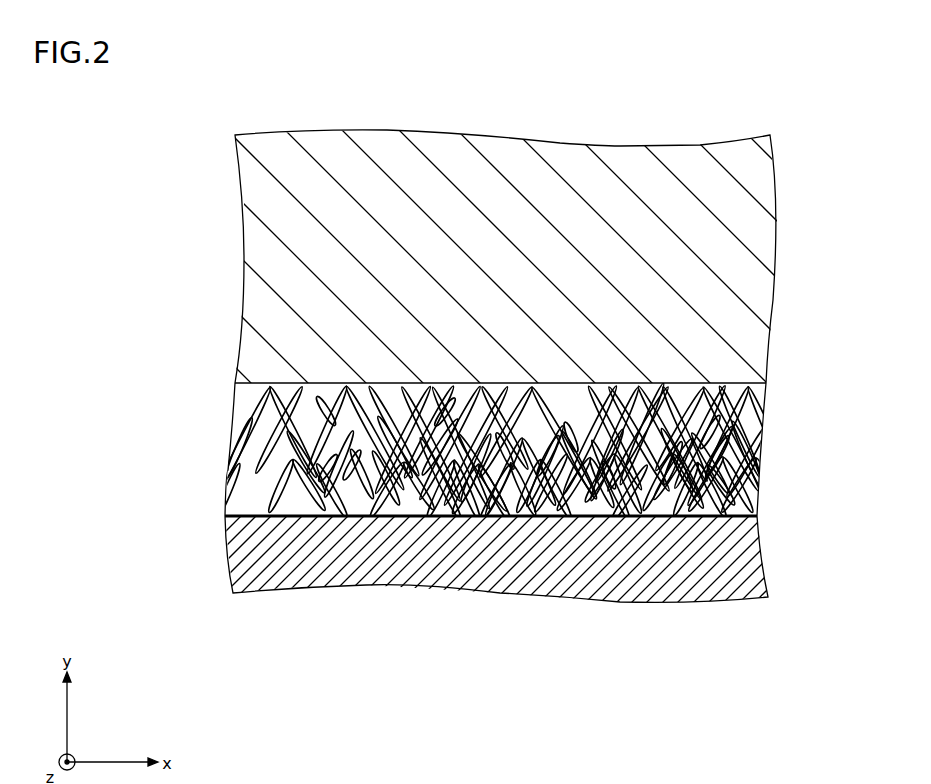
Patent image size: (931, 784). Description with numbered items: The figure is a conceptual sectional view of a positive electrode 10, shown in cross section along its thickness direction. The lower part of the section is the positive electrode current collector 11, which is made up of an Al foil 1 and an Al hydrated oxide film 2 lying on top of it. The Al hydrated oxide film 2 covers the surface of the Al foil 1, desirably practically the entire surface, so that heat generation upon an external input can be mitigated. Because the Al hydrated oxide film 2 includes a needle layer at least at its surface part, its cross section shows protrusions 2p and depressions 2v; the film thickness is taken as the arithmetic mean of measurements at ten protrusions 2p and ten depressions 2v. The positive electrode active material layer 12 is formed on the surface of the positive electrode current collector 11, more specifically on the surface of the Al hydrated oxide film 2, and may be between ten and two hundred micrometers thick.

The positive electrode 10 is at (122, 150).
The positive electrode active material layer 12 is at (204, 131).
The positive electrode current collector 11 is at (167, 422).
The Al hydrated oxide film 2 is at (204, 380).
The Al foil 1 is at (204, 516).
The depression 2v is at (642, 403).
The protrusion 2p is at (663, 383).